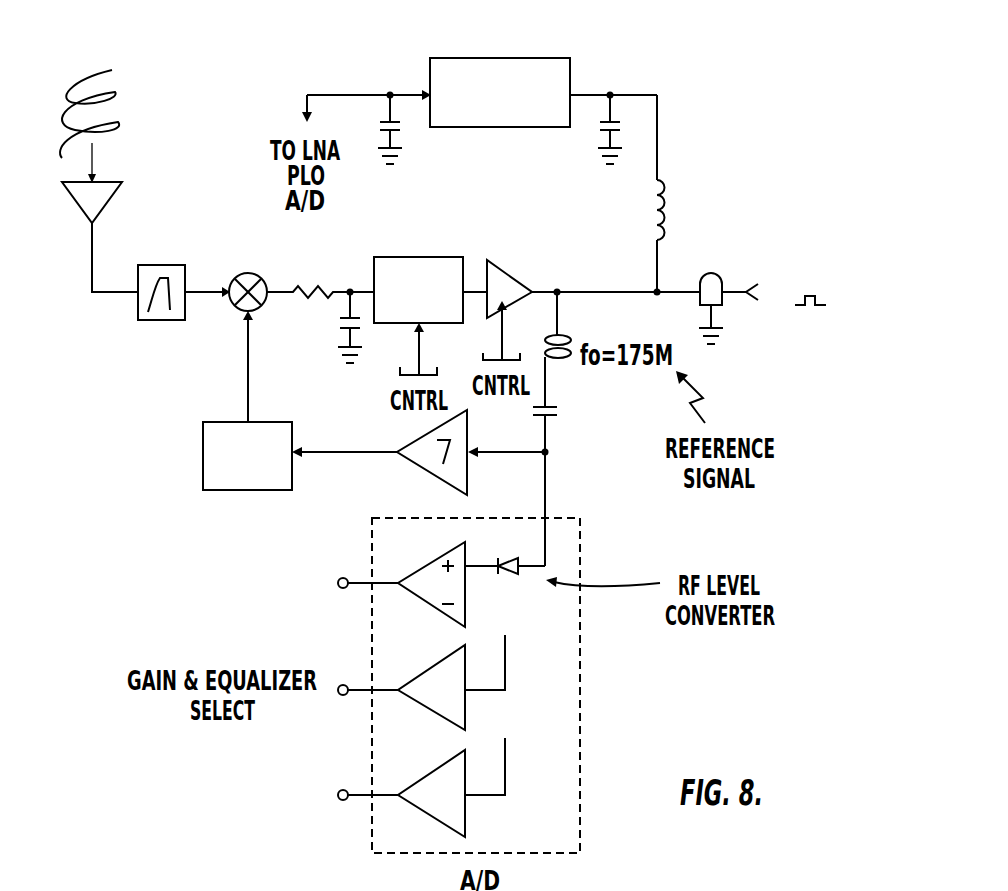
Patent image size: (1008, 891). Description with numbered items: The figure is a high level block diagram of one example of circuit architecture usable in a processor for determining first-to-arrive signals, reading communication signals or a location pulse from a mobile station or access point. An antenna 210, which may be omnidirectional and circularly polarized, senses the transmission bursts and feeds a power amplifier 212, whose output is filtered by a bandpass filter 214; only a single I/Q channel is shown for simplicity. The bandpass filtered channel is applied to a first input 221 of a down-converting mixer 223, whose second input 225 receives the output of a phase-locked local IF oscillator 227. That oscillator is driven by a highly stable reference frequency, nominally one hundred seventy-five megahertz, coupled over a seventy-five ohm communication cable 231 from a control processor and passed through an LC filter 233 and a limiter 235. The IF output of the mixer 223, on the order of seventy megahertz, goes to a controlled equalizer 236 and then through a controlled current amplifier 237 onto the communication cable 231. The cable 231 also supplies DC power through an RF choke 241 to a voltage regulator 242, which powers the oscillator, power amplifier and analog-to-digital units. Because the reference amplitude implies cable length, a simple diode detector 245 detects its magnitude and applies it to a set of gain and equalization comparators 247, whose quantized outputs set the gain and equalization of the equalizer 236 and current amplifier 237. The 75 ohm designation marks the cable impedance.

The antenna 210 is at (115, 97).
The power amplifier 212 is at (72, 205).
The bandpass filter 214 is at (162, 321).
The first input 221 is at (232, 282).
The down-converting mixer 223 is at (245, 273).
The second input 225 is at (241, 311).
The phase-locked local IF oscillator 227 is at (203, 457).
The communication cable 231 is at (603, 289).
The LC filter 233 is at (565, 335).
The limiter 235 is at (430, 442).
The controlled equalizer 236 is at (424, 257).
The controlled current amplifier 237 is at (502, 272).
The RF choke 241 is at (653, 207).
The voltage regulator 242 is at (550, 58).
The diode detector 245 is at (506, 560).
The gain and equalization comparators 247 is at (520, 762).
The output connector 75 is at (762, 308).